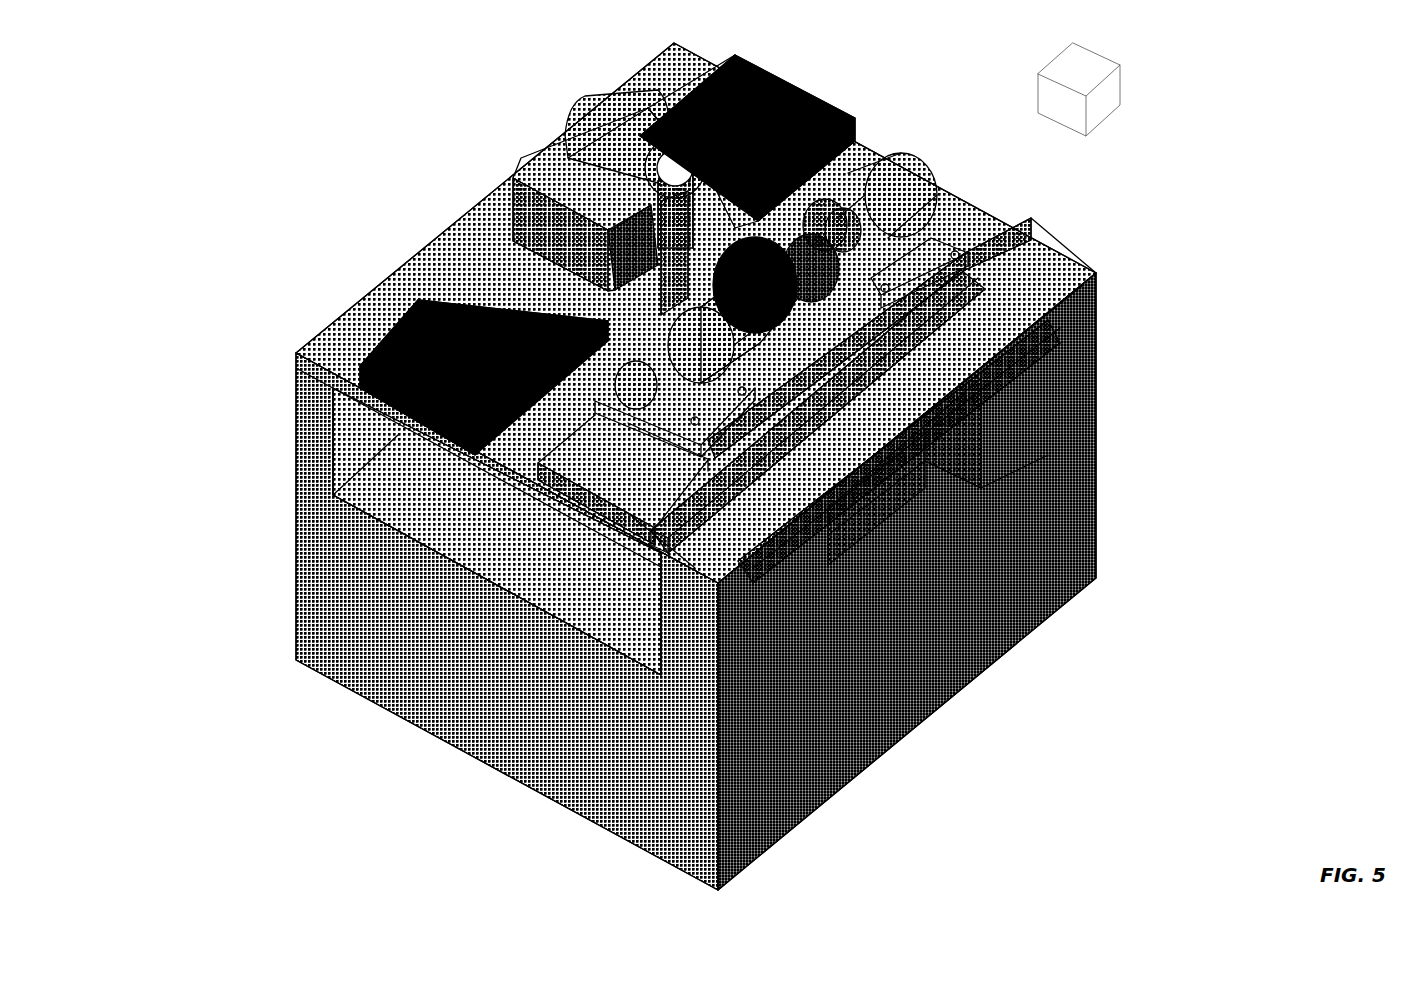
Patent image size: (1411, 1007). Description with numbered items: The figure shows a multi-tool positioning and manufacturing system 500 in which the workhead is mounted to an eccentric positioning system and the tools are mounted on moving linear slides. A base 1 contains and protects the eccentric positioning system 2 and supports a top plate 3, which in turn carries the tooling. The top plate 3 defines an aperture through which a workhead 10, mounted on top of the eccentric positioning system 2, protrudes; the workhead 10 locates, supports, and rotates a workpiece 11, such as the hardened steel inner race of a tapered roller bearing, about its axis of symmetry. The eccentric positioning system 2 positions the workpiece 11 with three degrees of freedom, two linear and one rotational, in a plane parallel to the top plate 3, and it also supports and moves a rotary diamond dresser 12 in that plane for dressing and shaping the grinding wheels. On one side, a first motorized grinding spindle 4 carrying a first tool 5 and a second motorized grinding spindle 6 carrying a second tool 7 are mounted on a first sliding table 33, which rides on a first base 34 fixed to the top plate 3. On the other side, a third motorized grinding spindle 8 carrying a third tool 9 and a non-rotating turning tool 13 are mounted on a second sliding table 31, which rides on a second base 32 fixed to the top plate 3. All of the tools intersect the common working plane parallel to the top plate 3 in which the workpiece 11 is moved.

The multi-tool positioning and manufacturing system 500 is at (262, 243).
The base 1 is at (287, 535).
The eccentric positioning system 2 is at (1012, 625).
The top plate 3 is at (417, 225).
The second sliding table 31 is at (503, 202).
The second base 32 is at (410, 300).
The non-rotating turning tool 13 is at (535, 118).
The third motorized grinding spindle 8 is at (640, 100).
The third tool 9 is at (703, 153).
The workhead 10 is at (667, 130).
The workpiece 11 is at (750, 212).
The rotary diamond dresser 12 is at (747, 138).
The second motorized grinding spindle 6 is at (920, 172).
The first sliding table 33 is at (917, 258).
The first base 34 is at (987, 200).
The second tool 7 is at (885, 330).
The first tool 5 is at (813, 330).
The first motorized grinding spindle 4 is at (608, 405).